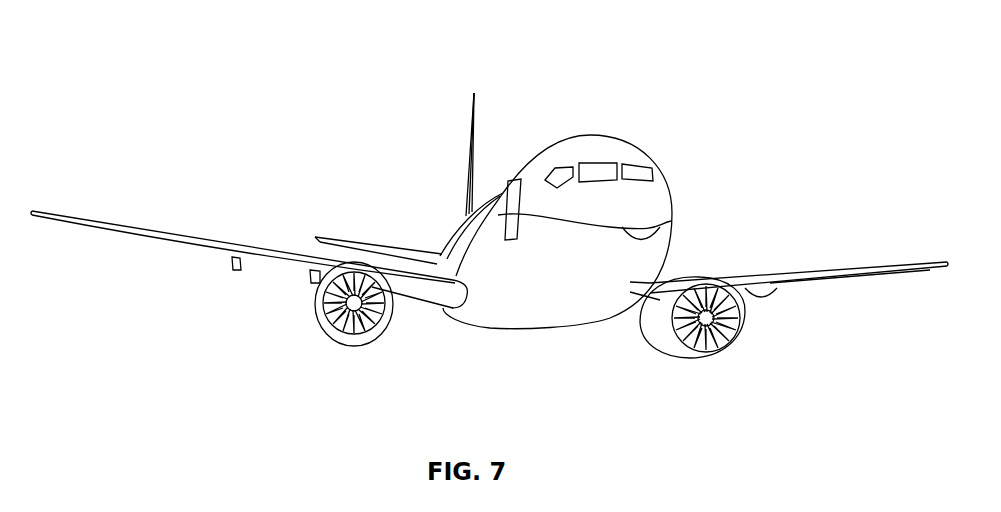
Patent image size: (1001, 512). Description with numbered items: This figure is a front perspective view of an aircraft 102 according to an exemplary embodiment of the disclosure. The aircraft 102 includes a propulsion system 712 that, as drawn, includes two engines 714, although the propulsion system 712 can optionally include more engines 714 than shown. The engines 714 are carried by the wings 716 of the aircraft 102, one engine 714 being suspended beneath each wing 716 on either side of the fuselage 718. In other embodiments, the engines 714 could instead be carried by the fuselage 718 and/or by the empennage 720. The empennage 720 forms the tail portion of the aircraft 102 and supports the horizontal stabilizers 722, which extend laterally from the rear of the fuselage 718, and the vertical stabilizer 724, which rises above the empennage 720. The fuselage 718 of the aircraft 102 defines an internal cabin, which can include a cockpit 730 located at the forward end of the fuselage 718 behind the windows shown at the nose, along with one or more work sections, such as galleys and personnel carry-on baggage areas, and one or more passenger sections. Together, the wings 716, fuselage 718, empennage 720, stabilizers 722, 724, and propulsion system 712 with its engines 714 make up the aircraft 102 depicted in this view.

The aircraft 102 is at (261, 44).
The propulsion system 712 is at (780, 352).
The engines 714 is at (352, 345).
The wings 716 is at (155, 232).
The fuselage 718 is at (672, 196).
The empennage 720 is at (461, 224).
The horizontal stabilizers 722 is at (350, 237).
The vertical stabilizer 724 is at (470, 128).
The cockpit 730 is at (603, 167).